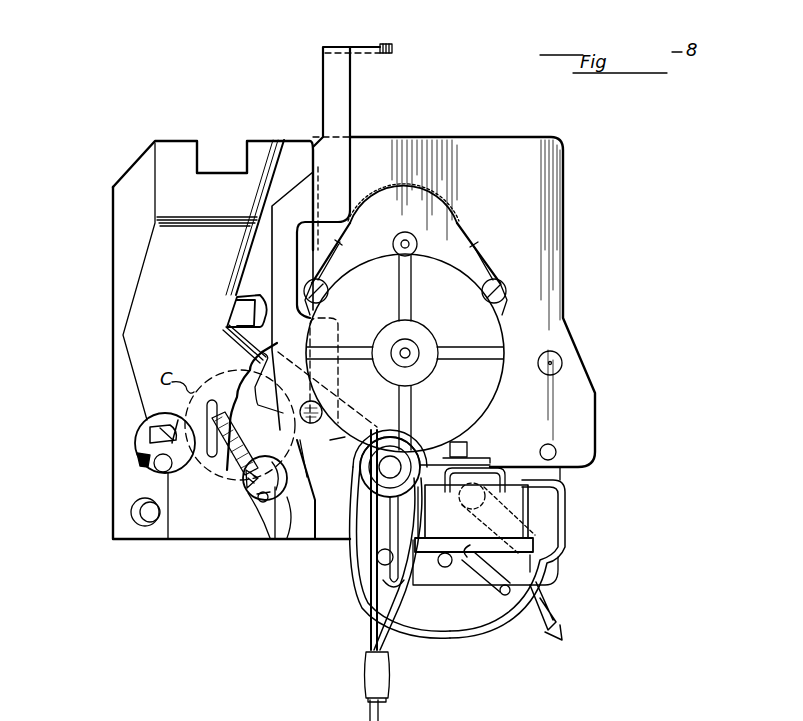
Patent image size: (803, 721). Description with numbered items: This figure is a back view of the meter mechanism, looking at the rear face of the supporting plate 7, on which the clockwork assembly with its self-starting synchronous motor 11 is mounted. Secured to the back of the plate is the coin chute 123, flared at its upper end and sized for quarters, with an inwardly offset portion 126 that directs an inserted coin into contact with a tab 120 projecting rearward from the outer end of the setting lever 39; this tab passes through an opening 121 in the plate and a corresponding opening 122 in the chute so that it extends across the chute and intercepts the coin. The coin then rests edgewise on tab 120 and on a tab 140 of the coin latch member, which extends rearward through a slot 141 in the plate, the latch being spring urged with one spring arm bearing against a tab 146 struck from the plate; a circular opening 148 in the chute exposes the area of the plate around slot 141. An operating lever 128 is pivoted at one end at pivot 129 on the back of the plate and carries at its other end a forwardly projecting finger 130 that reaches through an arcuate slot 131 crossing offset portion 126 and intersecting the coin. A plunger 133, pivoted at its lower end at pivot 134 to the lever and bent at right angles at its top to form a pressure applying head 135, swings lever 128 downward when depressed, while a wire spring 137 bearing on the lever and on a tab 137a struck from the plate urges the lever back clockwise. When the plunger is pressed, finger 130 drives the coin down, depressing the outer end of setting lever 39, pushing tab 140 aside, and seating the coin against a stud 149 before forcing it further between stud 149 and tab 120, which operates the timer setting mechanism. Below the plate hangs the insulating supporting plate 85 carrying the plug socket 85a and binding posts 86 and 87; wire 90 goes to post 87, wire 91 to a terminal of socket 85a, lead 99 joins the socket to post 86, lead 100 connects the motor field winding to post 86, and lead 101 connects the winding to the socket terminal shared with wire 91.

The supporting plate 7 is at (560, 268).
The self-starting synchronous motor 11 is at (480, 338).
The setting lever 39 is at (278, 540).
The supporting plate of insulating material 85 is at (565, 553).
The electrical connecting device 85a is at (518, 525).
The binding post 86 is at (480, 497).
The binding post 87 is at (465, 560).
The wire 90 is at (533, 627).
The wire 91 is at (385, 713).
The lead 99 is at (557, 480).
The lead 100 is at (350, 557).
The lead 101 is at (368, 617).
The tab 120 is at (209, 526).
The opening 121 is at (284, 477).
The opening 122 is at (253, 507).
The coin chute 123 is at (138, 350).
The inwardly offset portion 126 is at (193, 402).
The operating lever 128 is at (336, 440).
The pivot 129 is at (408, 437).
The forwardly projecting finger 130 is at (267, 352).
The arcuate slot 131 is at (245, 425).
The operating rod or plunger 133 is at (342, 112).
The pivot 134 is at (300, 413).
The pressure applying head or finger 135 is at (392, 56).
The wire spring 137 is at (467, 440).
The tab 137a is at (468, 440).
The tab 140 is at (153, 443).
The slot 141 is at (148, 432).
The tab 146 is at (155, 459).
The circular opening 148 is at (145, 420).
The stud 149 is at (143, 462).